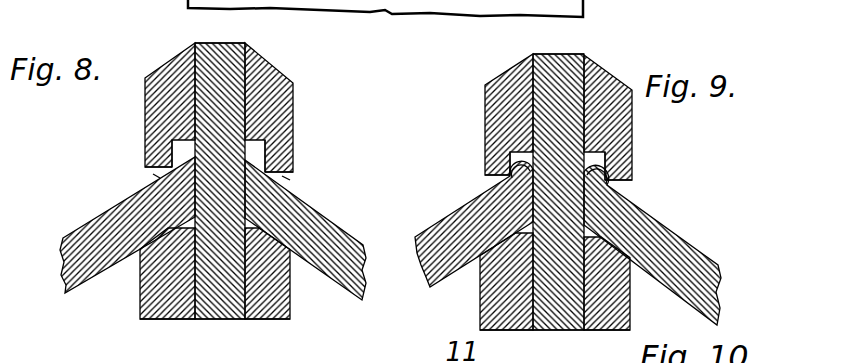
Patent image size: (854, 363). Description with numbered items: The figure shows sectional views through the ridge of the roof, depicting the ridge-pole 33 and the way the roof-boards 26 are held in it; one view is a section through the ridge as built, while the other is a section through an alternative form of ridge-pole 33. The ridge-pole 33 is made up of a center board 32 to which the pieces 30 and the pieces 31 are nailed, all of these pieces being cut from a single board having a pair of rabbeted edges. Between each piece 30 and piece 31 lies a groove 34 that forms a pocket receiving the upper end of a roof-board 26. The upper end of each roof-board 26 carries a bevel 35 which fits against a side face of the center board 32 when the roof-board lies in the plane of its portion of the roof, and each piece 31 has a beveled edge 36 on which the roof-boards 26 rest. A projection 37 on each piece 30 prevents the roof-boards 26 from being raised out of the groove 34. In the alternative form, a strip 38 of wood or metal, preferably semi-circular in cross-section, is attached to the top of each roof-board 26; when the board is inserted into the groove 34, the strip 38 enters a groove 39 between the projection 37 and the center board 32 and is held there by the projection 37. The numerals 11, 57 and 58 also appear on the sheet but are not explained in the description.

In FIG. 8, the blade 11 is at (204, 228).
In FIG. 9, the blade 11 is at (573, 243).
In FIG. 8, the roof-board 26 is at (63, 238).
In FIG. 9, the roof-board 26 is at (700, 265).
In FIG. 8, the piece 30 is at (172, 60).
In FIG. 9, the piece 30 is at (508, 70).
In FIG. 8, the piece 31 is at (164, 318).
In FIG. 9, the piece 31 is at (483, 307).
In FIG. 8, the center board 32 is at (222, 47).
In FIG. 9, the center board 32 is at (556, 53).
In FIG. 8, the ridge-pole 33 is at (220, 106).
In FIG. 9, the ridge-pole 33 is at (556, 108).
In FIG. 8, the groove 34 is at (153, 174).
In FIG. 8, the bevel 35 is at (193, 193).
In FIG. 8, the beveled edge 36 is at (140, 243).
In FIG. 9, the beveled edge 36 is at (481, 258).
In FIG. 8, the projection 37 is at (145, 153).
In FIG. 9, the projection 37 is at (498, 178).
In FIG. 9, the strip 38 is at (500, 177).
In FIG. 8, the groove 39 is at (168, 147).
In FIG. 9, the groove 39 is at (510, 151).
In FIG. 8, the member 57 is at (202, 352).
In FIG. 8, the member 58 is at (232, 362).